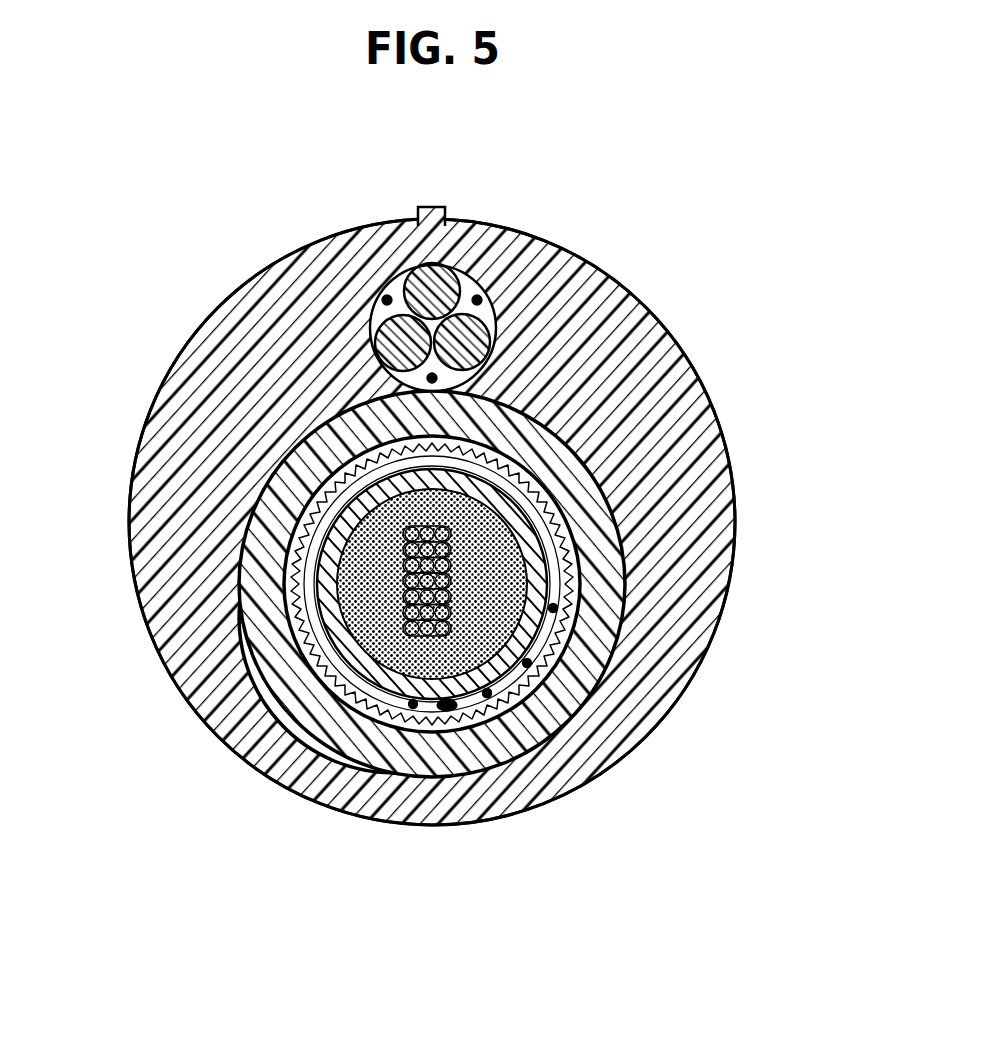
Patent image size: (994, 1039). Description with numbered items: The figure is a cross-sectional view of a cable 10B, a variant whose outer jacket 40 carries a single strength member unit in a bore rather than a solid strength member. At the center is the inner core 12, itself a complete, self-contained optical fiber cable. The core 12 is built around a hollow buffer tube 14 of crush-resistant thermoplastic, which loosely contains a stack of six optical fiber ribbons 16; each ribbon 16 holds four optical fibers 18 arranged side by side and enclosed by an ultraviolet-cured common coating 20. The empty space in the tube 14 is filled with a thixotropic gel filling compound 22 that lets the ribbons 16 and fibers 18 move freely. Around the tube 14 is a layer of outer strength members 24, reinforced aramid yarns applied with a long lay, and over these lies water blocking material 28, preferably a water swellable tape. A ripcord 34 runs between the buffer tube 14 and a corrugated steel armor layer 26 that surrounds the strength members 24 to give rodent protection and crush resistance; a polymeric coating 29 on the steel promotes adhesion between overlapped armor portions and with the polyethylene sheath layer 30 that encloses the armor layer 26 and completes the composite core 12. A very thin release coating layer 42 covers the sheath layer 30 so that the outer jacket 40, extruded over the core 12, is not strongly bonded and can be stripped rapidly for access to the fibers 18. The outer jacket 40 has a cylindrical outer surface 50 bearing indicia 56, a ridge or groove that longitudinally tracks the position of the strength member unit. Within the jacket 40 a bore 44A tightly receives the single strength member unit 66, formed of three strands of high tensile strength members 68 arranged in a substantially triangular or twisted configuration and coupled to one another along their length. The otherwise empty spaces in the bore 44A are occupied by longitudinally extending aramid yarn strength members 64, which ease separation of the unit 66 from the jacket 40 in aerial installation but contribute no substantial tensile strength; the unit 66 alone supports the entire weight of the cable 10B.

The cable 10B is at (182, 193).
The inner core 12 is at (234, 557).
The buffer tube 14 is at (545, 543).
The optical fiber ribbons 16 is at (474, 597).
The optical fibers 18 is at (463, 534).
The common coating 20 is at (406, 518).
The filling compound 22 is at (370, 614).
The outer strength members 24 is at (577, 620).
The corrugated steel armor layer 26 is at (555, 487).
The water blocking material 28 is at (583, 667).
The polymeric coating 29 is at (505, 722).
The sheath layer 30 is at (532, 423).
The ripcord 34 is at (448, 711).
The outer jacket 40 is at (592, 287).
The release coating layer 42 is at (294, 733).
The bore 44A is at (476, 336).
The outer surface 50 is at (316, 236).
The indicia 56 is at (437, 206).
The strength members 64 is at (389, 284).
The single strength member unit 66 is at (381, 334).
The high tensile strength members 68 is at (378, 337).